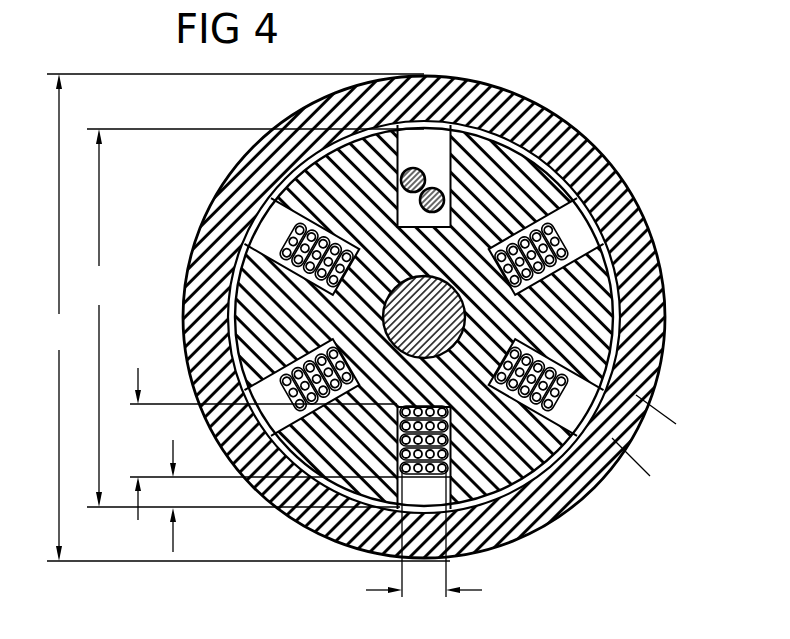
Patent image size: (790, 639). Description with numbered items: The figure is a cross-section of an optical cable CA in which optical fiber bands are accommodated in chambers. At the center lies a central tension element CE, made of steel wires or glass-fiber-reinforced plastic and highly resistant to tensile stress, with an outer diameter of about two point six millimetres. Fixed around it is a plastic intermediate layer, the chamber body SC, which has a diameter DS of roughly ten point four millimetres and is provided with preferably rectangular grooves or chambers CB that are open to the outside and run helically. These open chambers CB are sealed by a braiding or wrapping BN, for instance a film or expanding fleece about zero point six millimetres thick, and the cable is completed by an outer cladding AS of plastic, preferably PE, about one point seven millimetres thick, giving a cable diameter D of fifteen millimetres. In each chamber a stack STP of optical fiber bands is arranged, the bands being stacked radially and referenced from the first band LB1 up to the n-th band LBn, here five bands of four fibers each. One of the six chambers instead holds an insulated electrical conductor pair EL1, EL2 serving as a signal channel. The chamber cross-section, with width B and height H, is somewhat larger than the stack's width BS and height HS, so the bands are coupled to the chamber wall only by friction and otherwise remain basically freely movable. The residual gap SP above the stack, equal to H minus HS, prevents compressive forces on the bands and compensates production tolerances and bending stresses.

The insulated electrical conductor EL1 is at (405, 170).
The insulated electrical conductor EL2 is at (434, 188).
The chamber body SC is at (498, 145).
The optical fiber band LBn is at (565, 122).
The optical cable CA is at (610, 128).
The braiding or wrapping BN is at (258, 214).
The stack of optical fiber bands STP is at (585, 205).
The optical fiber band LB1 is at (582, 238).
The chamber height H is at (528, 337).
The chamber CB is at (630, 369).
The chamber width B is at (692, 385).
The outer cladding AS is at (577, 503).
The cable diameter D is at (248, 317).
The chamber body diameter DS is at (254, 318).
The stack height HS is at (288, 444).
The residual gap SP is at (171, 496).
The central tension element CE is at (399, 349).
The stack width BS is at (424, 540).